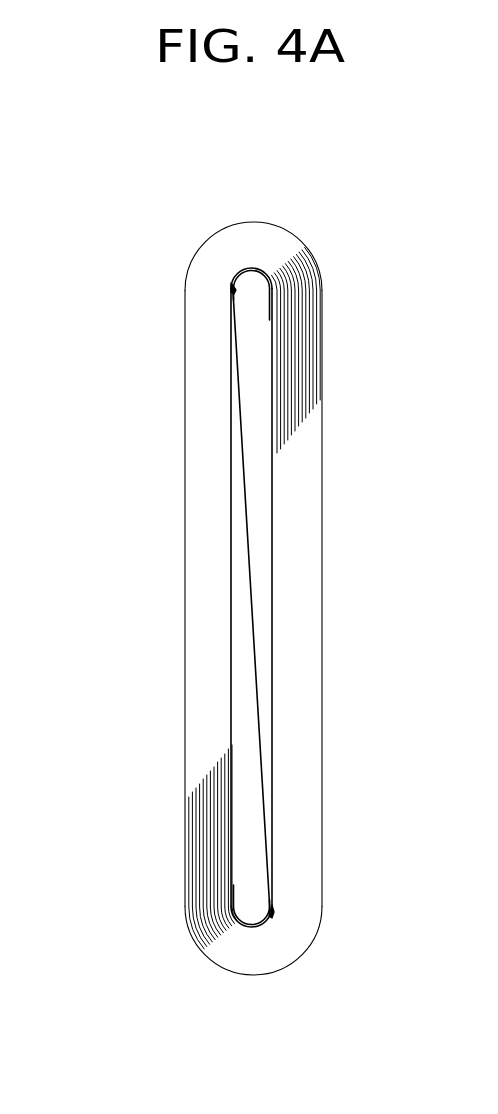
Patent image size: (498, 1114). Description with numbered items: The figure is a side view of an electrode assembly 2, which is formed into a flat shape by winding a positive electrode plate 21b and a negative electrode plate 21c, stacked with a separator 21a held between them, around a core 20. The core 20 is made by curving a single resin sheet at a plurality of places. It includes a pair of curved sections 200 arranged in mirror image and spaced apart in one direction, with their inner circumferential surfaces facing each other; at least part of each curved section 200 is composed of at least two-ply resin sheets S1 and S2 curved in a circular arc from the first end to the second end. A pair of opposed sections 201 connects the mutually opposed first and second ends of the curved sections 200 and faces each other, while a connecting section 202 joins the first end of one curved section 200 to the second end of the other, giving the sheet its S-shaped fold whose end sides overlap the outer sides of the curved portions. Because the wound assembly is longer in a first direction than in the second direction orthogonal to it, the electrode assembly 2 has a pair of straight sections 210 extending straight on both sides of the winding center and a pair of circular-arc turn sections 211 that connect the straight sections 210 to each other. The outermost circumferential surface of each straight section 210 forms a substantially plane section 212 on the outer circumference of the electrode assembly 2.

The electrode assembly 2 is at (224, 603).
The core 20 is at (242, 601).
The curved section 200 is at (254, 601).
The opposed section 201 is at (230, 490).
The connecting section 202 is at (259, 668).
The straight section 210 is at (208, 630).
The turn section 211 is at (250, 245).
The plane section 212 is at (185, 543).
The separator 21a is at (176, 598).
The positive electrode plate 21b is at (296, 350).
The negative electrode plate 21c is at (203, 841).
The resin sheet S1 is at (234, 281).
The resin sheet S2 is at (250, 266).